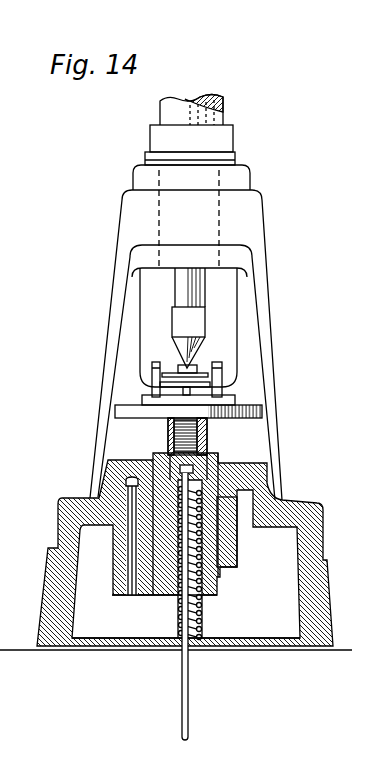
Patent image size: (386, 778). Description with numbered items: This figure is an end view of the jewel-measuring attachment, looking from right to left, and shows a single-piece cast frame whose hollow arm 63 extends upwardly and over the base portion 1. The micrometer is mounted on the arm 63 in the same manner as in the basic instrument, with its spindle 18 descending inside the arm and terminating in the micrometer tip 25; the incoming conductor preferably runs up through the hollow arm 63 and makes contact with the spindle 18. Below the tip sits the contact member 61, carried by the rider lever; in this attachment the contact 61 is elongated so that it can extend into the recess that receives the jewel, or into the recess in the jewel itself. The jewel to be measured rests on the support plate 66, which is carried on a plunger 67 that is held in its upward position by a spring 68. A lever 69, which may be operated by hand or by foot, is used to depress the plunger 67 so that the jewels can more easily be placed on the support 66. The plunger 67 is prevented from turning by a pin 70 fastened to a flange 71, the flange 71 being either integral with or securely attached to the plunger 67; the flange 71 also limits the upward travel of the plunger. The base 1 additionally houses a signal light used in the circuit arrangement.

The base portion 1 is at (42, 628).
The spindle 18 is at (177, 297).
The micrometer tip 25 is at (177, 347).
The contact member 61 is at (153, 387).
The hollow arm 63 is at (118, 275).
The support plate 66 is at (262, 412).
The plunger 67 is at (220, 440).
The spring 68 is at (193, 612).
The lever 69 is at (187, 718).
The pin 70 is at (127, 500).
The flange 71 is at (217, 585).